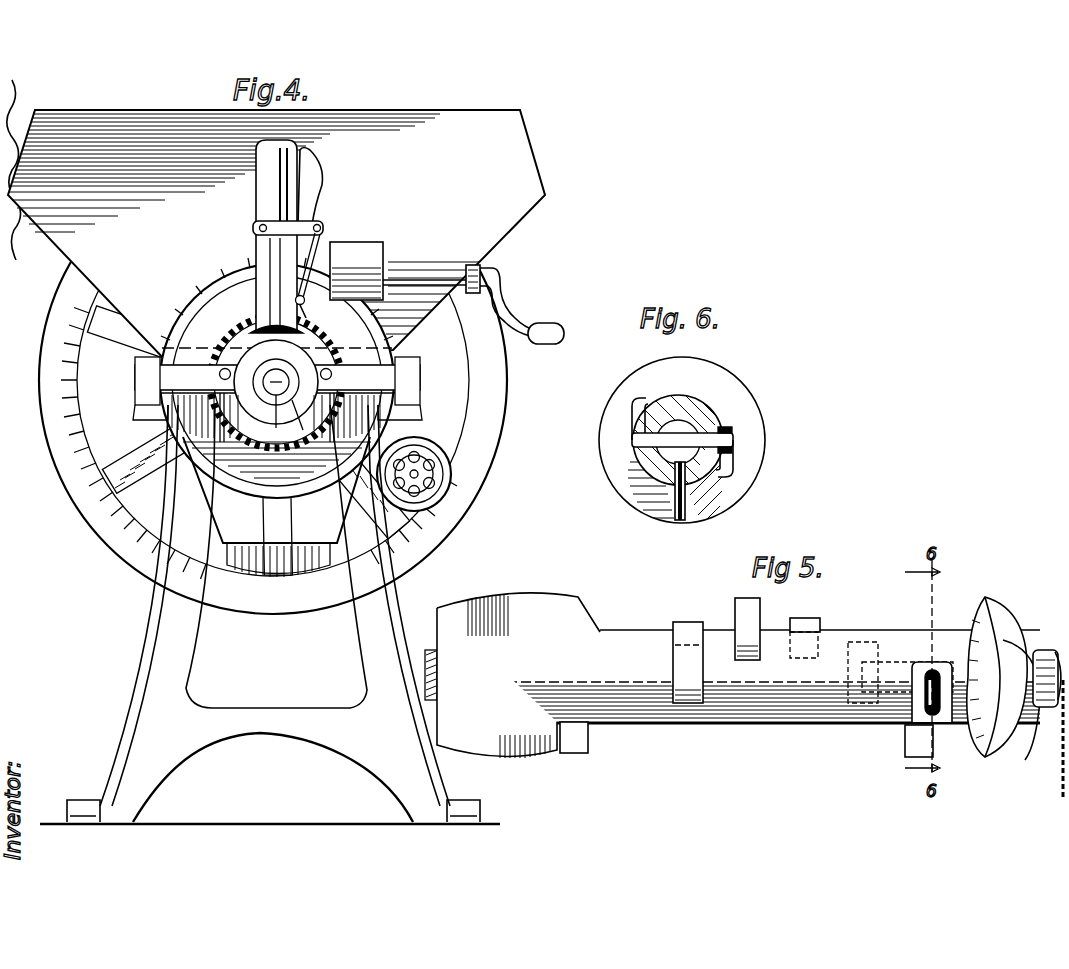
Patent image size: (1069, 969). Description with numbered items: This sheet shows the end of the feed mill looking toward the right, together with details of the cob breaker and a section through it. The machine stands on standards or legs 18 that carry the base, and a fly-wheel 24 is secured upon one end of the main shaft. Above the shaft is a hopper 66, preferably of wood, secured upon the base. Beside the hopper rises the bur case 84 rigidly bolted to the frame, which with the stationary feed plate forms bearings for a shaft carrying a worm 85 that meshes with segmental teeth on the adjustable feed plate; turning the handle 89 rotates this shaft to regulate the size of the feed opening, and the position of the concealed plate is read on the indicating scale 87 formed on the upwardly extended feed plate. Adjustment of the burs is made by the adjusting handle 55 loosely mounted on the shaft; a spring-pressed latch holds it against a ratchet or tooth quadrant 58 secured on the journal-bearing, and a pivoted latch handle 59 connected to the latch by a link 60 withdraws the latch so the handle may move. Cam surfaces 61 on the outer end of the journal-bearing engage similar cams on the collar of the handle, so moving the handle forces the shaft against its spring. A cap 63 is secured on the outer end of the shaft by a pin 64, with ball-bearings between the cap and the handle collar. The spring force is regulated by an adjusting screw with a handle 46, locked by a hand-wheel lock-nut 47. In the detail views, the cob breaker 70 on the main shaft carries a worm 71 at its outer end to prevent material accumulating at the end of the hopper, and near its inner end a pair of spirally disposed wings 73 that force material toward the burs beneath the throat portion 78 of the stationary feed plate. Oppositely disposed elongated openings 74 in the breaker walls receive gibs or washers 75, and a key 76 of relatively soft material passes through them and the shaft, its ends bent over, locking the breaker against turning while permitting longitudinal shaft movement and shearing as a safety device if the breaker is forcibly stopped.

In FIG. 4, the standards or legs 18 is at (282, 712).
In FIG. 4, the fly-wheel 24 is at (470, 508).
In FIG. 4, the handle 46 is at (432, 460).
In FIG. 4, the hand-wheel lock-nut 47 is at (423, 444).
In FIG. 4, the adjusting handle 55 is at (290, 150).
In FIG. 4, the ratchet or tooth quadrant 58 is at (246, 338).
In FIG. 4, the latch handle 59 is at (322, 170).
In FIG. 4, the link 60 is at (308, 298).
In FIG. 4, the cam surfaces 61 is at (275, 430).
In FIG. 6, the cam surfaces 61 is at (678, 470).
In FIG. 5, the cam surfaces 61 is at (1050, 712).
In FIG. 4, the cap 63 is at (298, 420).
In FIG. 4, the pin 64 is at (272, 390).
In FIG. 4, the hopper 66 is at (418, 125).
In FIG. 6, the cob breaker 70 is at (660, 490).
In FIG. 5, the cob breaker 70 is at (828, 645).
In FIG. 6, the worm 71 is at (748, 466).
In FIG. 5, the worm 71 is at (1010, 612).
In FIG. 5, the spirally disposed wings 73 is at (546, 606).
In FIG. 6, the elongated openings 74 is at (650, 426).
In FIG. 5, the elongated openings 74 is at (935, 668).
In FIG. 6, the gibs or washers 75 is at (686, 418).
In FIG. 6, the key 76 is at (716, 434).
In FIG. 5, the key 76 is at (898, 726).
In FIG. 5, the throat portion 78 is at (700, 625).
In FIG. 4, the bur case 84 is at (330, 268).
In FIG. 4, the worm 85 is at (414, 286).
In FIG. 4, the indicating scale 87 is at (363, 250).
In FIG. 4, the handle 89 is at (510, 312).